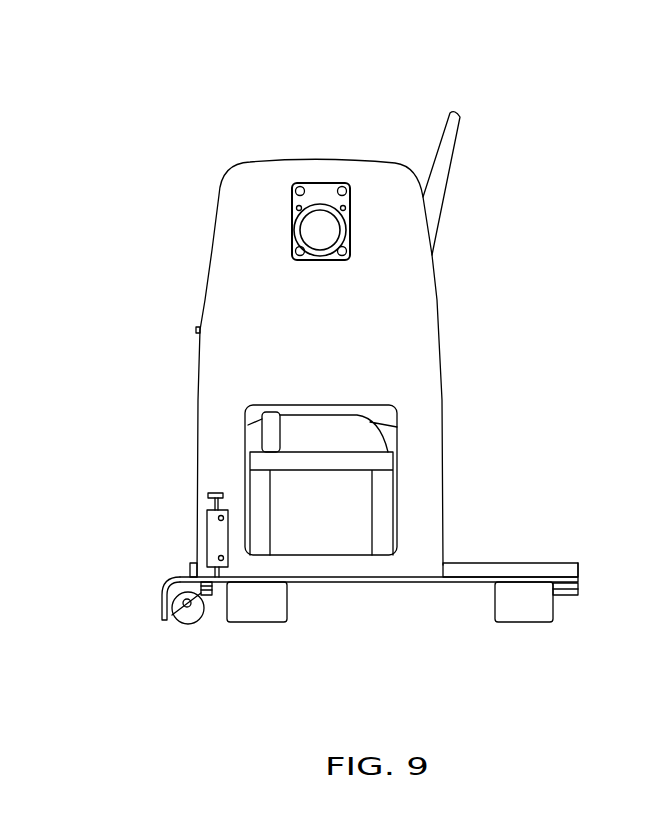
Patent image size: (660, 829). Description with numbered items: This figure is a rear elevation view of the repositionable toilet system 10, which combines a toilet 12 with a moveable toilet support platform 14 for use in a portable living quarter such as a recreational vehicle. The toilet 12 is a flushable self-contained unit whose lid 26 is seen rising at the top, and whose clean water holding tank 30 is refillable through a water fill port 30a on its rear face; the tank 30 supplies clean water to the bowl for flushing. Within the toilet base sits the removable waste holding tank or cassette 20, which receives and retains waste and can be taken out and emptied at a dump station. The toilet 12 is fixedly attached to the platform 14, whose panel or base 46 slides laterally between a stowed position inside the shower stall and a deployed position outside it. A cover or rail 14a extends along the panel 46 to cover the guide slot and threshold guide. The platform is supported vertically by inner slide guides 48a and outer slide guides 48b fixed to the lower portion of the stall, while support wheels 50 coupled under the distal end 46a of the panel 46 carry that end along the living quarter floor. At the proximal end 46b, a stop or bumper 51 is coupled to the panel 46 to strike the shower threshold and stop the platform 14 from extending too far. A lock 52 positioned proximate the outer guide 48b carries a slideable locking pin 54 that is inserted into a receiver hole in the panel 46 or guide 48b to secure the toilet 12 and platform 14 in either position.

The repositionable toilet system 10 is at (587, 165).
The toilet 12 is at (472, 303).
The moveable toilet support platform 14 is at (462, 585).
The cover or rail 14a is at (505, 570).
The removable waste holding tank or cassette 20 is at (322, 468).
The lid 26 is at (450, 140).
The clean water holding tank 30 is at (217, 255).
The water fill port 30a is at (295, 218).
The panel or base 46 is at (402, 577).
The distal end 46a is at (155, 598).
The proximal end 46b is at (590, 565).
The inner supports or slide guides 48a is at (525, 608).
The outer supports or slide guides 48b is at (262, 613).
The support wheels 50 is at (187, 623).
The stop or bumper 51 is at (575, 596).
The lock 52 is at (212, 523).
The slideable locking pin 54 is at (215, 570).